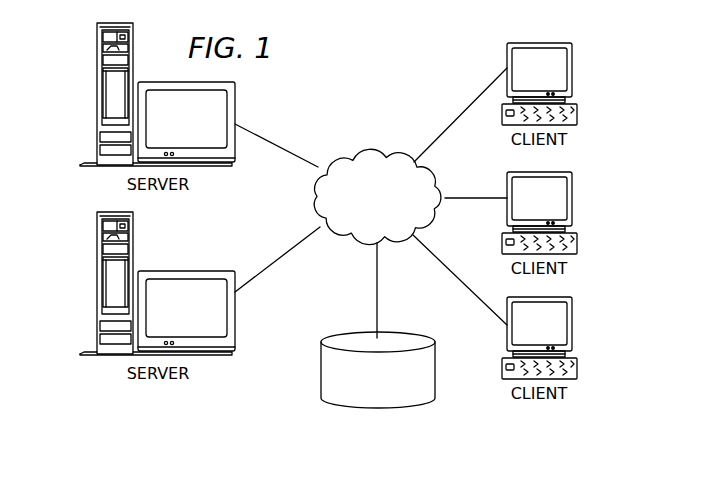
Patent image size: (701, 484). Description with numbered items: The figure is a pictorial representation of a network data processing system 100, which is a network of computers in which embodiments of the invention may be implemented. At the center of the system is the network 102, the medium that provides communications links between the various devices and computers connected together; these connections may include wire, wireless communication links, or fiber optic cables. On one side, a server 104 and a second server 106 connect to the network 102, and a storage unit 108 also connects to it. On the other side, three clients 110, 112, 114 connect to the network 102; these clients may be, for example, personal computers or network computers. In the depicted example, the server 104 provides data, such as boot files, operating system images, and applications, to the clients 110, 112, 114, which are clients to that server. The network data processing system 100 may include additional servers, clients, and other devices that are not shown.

The network data processing system 100 is at (424, 49).
The network 102 is at (351, 156).
The server 104 is at (97, 97).
The server 106 is at (97, 286).
The storage unit 108 is at (358, 408).
The client 110 is at (572, 70).
The client 112 is at (572, 196).
The client 114 is at (572, 325).